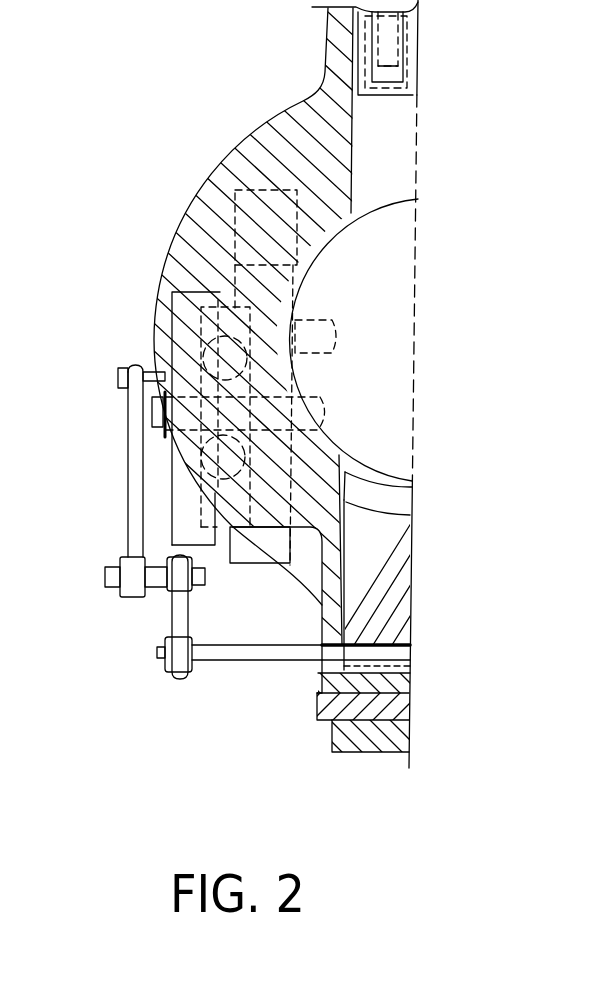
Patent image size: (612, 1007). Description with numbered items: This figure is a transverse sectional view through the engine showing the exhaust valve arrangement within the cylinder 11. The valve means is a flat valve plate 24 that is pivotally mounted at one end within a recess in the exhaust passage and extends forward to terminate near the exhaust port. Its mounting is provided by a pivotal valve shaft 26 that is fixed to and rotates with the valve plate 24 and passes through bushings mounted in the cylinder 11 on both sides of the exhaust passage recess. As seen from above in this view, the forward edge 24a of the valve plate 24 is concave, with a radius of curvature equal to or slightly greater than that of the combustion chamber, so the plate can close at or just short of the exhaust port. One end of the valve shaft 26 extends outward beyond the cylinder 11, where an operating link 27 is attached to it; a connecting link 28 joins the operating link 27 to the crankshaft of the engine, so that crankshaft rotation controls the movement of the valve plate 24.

The cylinder 11 is at (288, 135).
The valve plate 24 is at (388, 600).
The forward edge 24a is at (383, 480).
The valve shaft 26 is at (283, 650).
The operating link 27 is at (177, 617).
The connecting link 28 is at (128, 504).